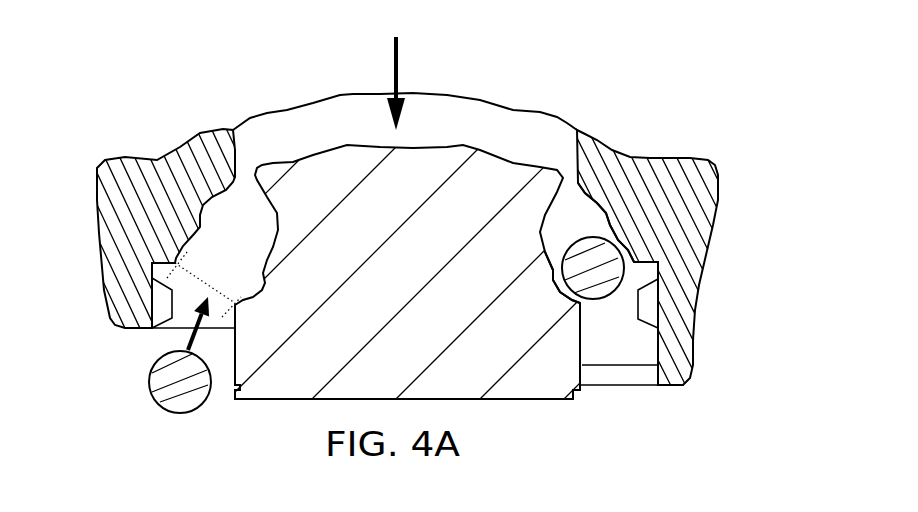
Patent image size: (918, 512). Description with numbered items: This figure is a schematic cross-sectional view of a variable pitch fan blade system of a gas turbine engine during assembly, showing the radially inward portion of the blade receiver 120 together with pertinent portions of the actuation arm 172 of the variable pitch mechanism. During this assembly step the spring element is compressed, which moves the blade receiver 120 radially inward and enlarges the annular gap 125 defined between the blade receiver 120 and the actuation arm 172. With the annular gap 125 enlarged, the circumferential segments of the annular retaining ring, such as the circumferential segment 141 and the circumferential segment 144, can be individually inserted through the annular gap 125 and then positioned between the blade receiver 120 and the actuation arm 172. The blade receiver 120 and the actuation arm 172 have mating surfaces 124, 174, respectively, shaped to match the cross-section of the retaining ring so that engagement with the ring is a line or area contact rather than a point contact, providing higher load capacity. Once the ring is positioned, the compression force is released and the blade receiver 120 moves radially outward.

The blade receiver 120 is at (507, 383).
The mating surface 124 is at (578, 297).
The annular gap 125 is at (187, 256).
The circumferential segment 141 is at (166, 402).
The circumferential segment 144 is at (591, 255).
The actuation arm 172 is at (118, 232).
The mating surface 174 is at (628, 254).